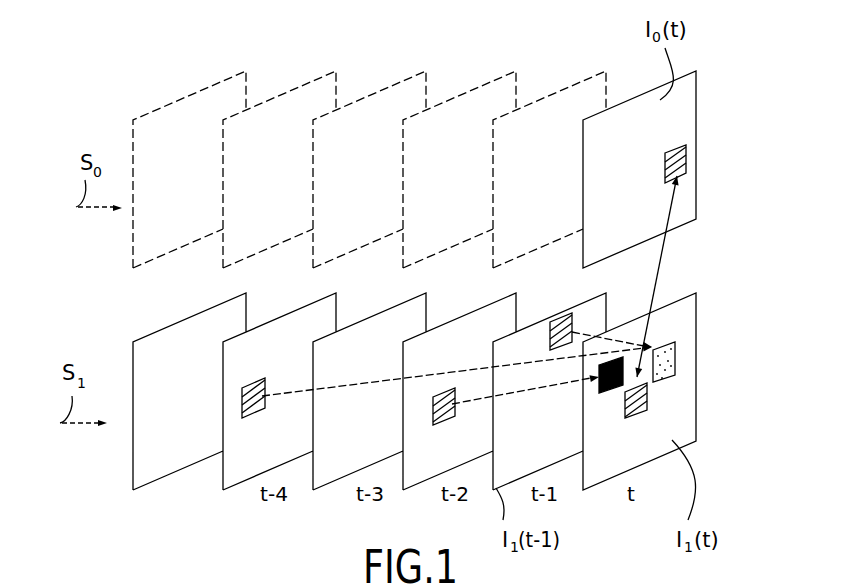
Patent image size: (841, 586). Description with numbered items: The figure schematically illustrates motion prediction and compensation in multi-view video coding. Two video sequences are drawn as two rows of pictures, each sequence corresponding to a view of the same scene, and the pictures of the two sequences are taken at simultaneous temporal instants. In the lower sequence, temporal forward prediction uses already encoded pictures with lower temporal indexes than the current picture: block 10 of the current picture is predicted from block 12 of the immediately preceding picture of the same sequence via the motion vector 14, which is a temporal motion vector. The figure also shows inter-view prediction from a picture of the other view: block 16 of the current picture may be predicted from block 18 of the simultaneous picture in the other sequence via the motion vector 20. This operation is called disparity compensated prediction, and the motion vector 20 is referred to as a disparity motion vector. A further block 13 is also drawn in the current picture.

The block of current picture 10 is at (675, 355).
The block of reference picture 12 is at (548, 334).
The co-located block in image I1(t) 13 is at (607, 393).
The temporal motion vector 14 is at (647, 342).
The block of picture I1(t) 16 is at (638, 414).
The block of picture I0(t) 18 is at (690, 160).
The disparity motion vector 20 is at (662, 263).